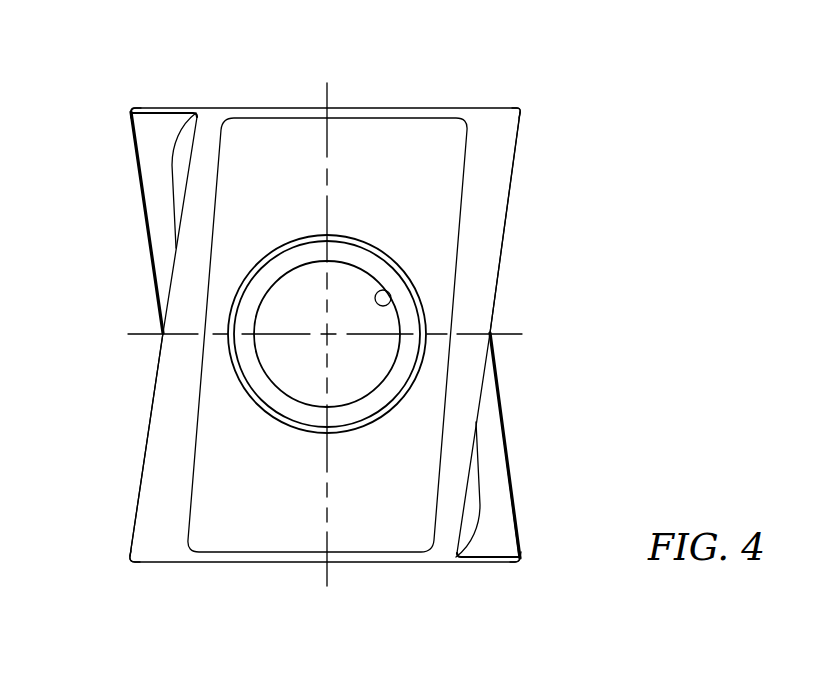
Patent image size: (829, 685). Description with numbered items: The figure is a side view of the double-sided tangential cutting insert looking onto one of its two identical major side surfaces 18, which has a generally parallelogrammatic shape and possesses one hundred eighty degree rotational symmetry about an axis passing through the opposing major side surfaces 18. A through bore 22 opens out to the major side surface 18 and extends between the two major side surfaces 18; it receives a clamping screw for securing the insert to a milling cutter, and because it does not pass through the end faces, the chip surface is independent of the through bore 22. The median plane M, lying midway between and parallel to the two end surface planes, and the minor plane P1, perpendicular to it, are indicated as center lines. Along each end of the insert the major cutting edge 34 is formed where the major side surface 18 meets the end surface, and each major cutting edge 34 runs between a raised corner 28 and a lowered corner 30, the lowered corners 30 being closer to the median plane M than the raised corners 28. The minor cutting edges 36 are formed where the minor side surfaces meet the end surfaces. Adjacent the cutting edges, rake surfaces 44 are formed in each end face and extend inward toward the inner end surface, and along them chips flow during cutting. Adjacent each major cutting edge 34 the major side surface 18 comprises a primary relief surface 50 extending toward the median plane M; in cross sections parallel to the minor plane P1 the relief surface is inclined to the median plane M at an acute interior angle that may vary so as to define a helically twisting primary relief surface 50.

The major side surface 18 is at (440, 185).
The through bore 22 is at (385, 289).
The raised corner 28 is at (130, 110).
The lowered corner 30 is at (190, 108).
The major cutting edge 34 is at (512, 215).
The minor cutting edge 36 is at (158, 107).
The rake surface 44 is at (158, 181).
The primary relief surface 50 is at (168, 458).
The median plane M is at (327, 98).
The minor plane P1 is at (508, 333).